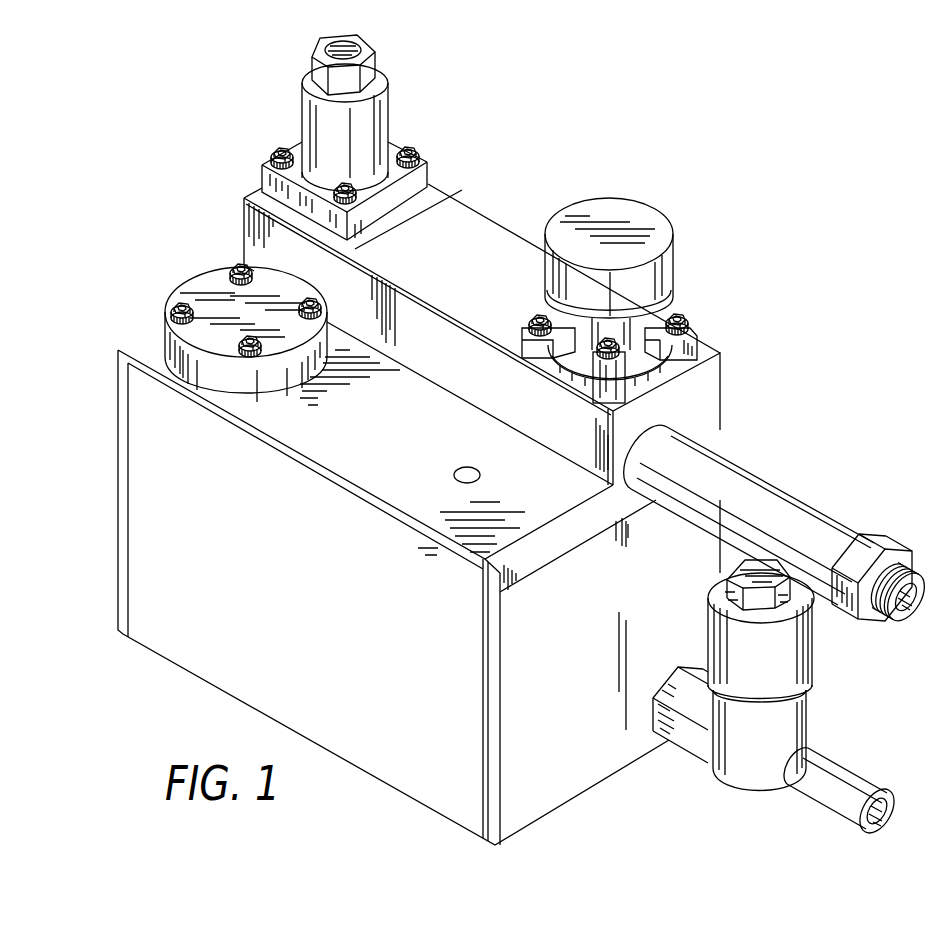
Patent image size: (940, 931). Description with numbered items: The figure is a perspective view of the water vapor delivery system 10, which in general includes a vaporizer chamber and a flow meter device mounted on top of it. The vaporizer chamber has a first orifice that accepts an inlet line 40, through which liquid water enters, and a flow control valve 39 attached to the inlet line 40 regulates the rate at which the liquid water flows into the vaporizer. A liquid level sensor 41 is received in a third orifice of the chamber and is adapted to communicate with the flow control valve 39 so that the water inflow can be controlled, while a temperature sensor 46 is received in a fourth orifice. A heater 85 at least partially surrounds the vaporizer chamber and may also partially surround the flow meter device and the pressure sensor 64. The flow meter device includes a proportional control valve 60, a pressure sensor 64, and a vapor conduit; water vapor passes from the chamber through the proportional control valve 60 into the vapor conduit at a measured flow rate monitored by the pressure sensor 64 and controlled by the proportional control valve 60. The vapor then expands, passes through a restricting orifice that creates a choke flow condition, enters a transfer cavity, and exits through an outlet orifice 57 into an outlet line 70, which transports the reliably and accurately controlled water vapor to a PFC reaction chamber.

The water vapor delivery system 10 is at (633, 129).
The flow control valve 39 is at (806, 699).
The inlet line 40 is at (836, 762).
The liquid level sensor 41 is at (195, 280).
The temperature sensor 46 is at (456, 471).
The outlet orifice 57 is at (906, 622).
The proportional control valve 60 is at (302, 109).
The pressure sensor 64 is at (678, 258).
The outlet line 70 is at (778, 486).
The heater 85 is at (475, 265).